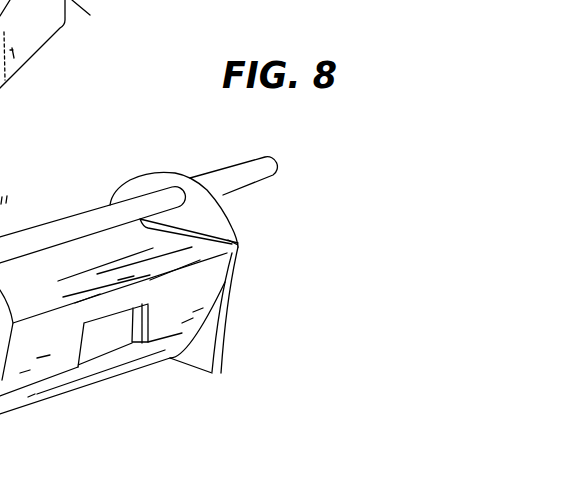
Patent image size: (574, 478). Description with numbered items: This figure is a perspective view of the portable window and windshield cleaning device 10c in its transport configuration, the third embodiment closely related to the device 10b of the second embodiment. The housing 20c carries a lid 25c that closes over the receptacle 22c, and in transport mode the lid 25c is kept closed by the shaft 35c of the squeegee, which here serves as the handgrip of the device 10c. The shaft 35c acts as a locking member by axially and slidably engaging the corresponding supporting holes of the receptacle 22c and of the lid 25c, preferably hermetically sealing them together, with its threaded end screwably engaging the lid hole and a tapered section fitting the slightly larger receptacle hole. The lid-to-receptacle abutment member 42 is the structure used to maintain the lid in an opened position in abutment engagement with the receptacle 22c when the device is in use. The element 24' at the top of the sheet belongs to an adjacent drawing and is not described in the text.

The portable device for window/windshield cleaning 10c is at (157, 389).
The housing 20c is at (18, 410).
The receptacle 22c is at (227, 290).
The lid 25c is at (238, 245).
The shaft 35c is at (108, 197).
The lid-to-receptacle abutment member 42 is at (50, 217).
The member 24' is at (61, 44).
The portable device for window/windshield cleaning 10b is at (172, 3).